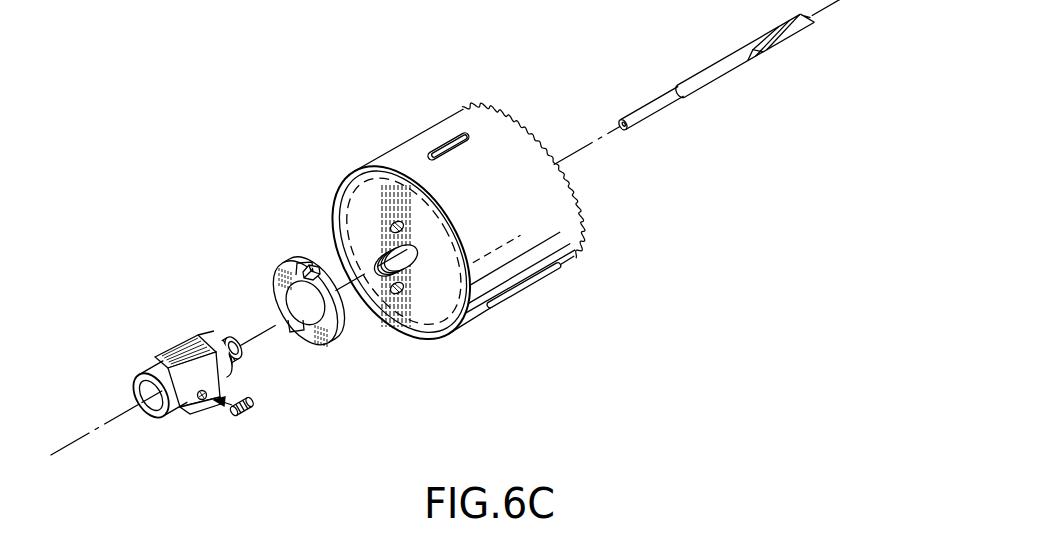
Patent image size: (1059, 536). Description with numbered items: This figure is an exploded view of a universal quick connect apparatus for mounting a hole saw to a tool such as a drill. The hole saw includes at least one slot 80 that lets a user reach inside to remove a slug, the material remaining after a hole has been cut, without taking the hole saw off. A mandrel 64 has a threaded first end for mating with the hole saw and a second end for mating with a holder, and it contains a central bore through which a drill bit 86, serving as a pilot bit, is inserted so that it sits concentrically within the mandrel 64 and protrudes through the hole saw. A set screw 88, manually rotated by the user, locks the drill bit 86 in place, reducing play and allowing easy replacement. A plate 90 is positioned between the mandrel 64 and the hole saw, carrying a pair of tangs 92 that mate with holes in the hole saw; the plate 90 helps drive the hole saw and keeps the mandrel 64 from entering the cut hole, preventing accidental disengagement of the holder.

The mandrel 64 is at (183, 362).
The slot 80 is at (457, 143).
The drill bit 86 is at (712, 72).
The set screw 88 is at (254, 414).
The plate 90 is at (340, 328).
The tangs 92 is at (310, 266).